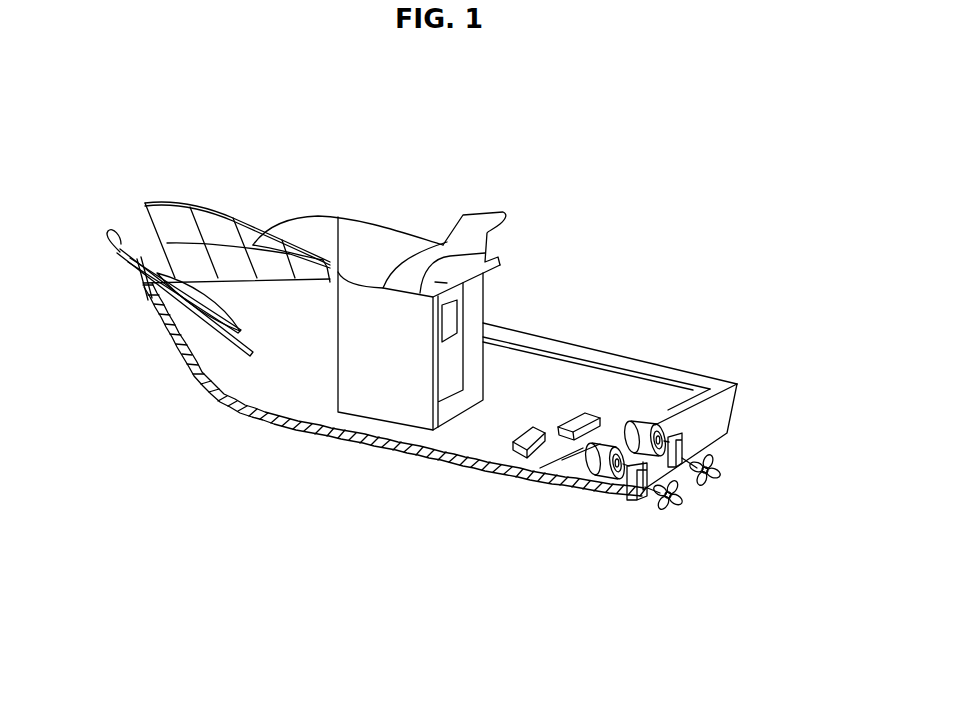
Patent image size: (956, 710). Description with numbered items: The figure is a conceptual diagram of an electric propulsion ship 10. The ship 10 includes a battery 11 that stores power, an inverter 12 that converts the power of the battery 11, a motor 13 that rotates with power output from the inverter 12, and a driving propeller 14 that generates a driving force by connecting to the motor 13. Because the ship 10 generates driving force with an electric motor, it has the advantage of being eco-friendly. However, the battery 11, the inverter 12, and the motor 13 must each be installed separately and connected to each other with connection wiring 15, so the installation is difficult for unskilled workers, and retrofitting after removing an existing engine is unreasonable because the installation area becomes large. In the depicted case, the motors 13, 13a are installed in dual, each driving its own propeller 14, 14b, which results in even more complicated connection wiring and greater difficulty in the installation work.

The electric propulsion ship 10 is at (132, 121).
The battery 11 is at (513, 460).
The inverter 12 is at (583, 410).
The motor 13 is at (600, 470).
The motor 13a is at (655, 408).
The driving propeller 14 is at (656, 491).
The driving propeller 14b is at (711, 486).
The connection wiring 15 is at (578, 457).